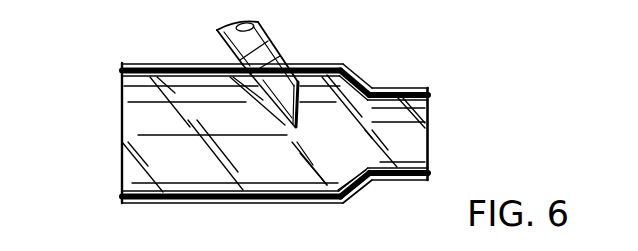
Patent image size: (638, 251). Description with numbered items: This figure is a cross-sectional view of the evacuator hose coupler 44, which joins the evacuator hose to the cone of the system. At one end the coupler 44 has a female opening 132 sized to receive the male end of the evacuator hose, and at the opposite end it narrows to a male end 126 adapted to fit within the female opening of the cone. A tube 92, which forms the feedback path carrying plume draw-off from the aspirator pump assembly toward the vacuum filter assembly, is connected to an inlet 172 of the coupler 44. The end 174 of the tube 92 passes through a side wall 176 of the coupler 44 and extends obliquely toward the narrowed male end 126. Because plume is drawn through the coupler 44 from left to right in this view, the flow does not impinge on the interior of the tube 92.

The evacuator hose coupler 44 is at (170, 61).
The tube 92 is at (261, 32).
The male end 126 is at (390, 87).
The female opening 132 is at (124, 197).
The inlet 172 is at (343, 204).
The end 174 is at (276, 108).
The side wall 176 is at (333, 64).